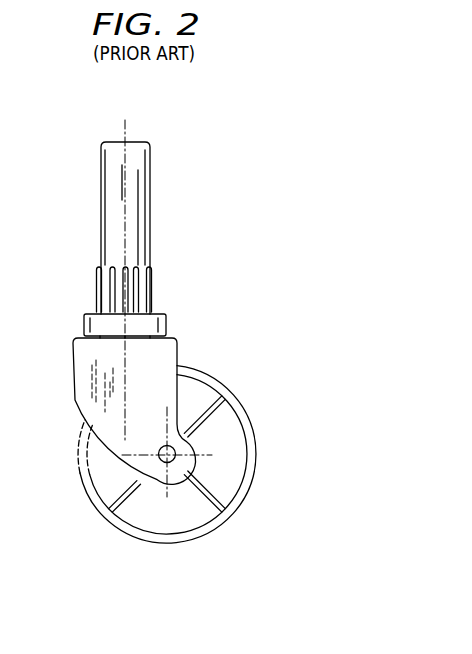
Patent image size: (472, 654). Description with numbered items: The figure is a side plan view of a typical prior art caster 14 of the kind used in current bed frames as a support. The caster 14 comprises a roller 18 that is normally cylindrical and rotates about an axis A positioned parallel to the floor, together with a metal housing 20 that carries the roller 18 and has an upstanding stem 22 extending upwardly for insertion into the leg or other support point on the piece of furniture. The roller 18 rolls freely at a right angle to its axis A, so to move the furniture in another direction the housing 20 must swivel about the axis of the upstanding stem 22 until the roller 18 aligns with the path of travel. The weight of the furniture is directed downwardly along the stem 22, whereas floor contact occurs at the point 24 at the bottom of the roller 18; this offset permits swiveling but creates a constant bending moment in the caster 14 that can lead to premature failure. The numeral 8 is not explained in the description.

The caster stem pin 8 is at (125, 200).
The upstanding stem 22 is at (148, 187).
The caster 14 is at (234, 260).
The metal housing 20 is at (85, 395).
The axis of rotation of the roller A is at (171, 446).
The roller 18 is at (243, 402).
The point of contact with the floor 24 is at (169, 544).